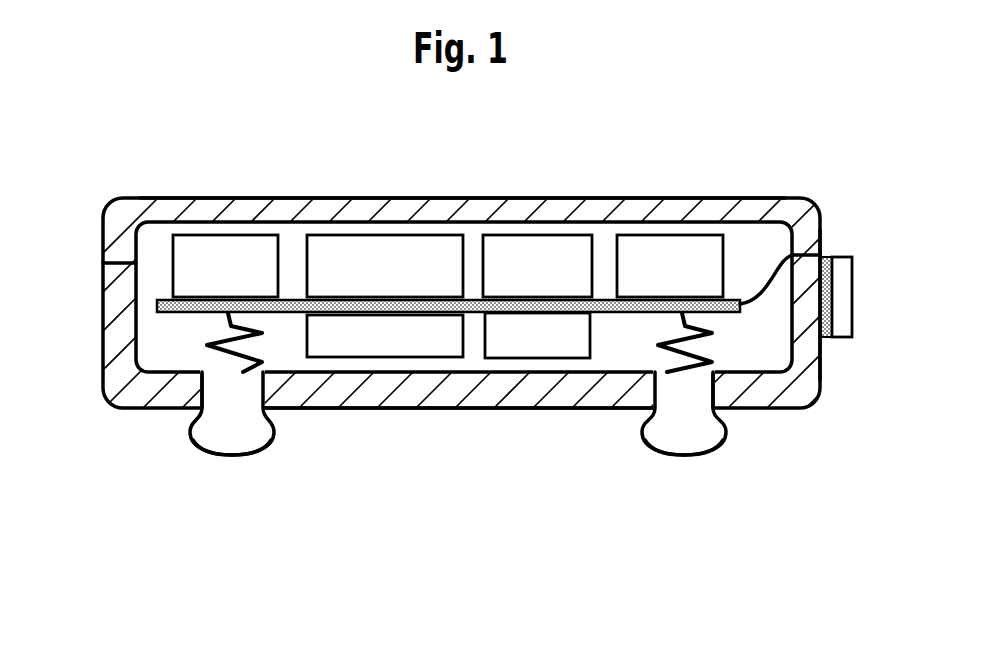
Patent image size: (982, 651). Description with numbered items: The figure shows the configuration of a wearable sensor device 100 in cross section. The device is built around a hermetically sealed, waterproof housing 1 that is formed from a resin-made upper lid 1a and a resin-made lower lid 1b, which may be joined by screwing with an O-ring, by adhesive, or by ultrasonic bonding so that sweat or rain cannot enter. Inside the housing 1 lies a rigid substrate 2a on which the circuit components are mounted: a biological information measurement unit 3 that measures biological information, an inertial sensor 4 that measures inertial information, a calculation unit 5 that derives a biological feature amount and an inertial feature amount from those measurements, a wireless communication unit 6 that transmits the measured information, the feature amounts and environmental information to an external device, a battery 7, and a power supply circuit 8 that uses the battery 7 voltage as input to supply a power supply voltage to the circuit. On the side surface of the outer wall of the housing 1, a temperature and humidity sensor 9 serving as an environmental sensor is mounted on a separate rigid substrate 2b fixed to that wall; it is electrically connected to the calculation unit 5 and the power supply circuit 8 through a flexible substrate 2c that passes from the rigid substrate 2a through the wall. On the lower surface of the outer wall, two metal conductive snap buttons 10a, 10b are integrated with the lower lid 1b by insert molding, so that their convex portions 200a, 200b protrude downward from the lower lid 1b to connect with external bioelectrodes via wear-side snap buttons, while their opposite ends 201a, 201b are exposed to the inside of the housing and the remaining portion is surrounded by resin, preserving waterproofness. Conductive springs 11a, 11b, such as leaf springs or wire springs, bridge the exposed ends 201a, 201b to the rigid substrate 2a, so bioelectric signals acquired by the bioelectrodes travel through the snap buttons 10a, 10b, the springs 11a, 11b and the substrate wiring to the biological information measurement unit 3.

The wearable sensor device 100 is at (422, 124).
The housing 1 is at (410, 187).
The upper lid 1a is at (478, 196).
The lower lid 1b is at (512, 407).
The rigid substrate 2a is at (157, 297).
The rigid substrate 2b is at (822, 338).
The flexible substrate 2c is at (765, 278).
The biological information measurement unit 3 is at (387, 235).
The inertial sensor 4 is at (232, 235).
The calculation unit 5 is at (642, 236).
The wireless communication unit 6 is at (562, 236).
The battery 7 is at (502, 362).
The power supply circuit 8 is at (385, 360).
The temperature and humidity sensor 9 is at (853, 290).
The snap button 10a is at (262, 450).
The snap button 10b is at (676, 462).
The spring 11a is at (208, 345).
The spring 11b is at (712, 352).
The convex portion 200a is at (233, 455).
The convex portion 200b is at (655, 447).
The end 201a is at (248, 374).
The end 201b is at (663, 370).